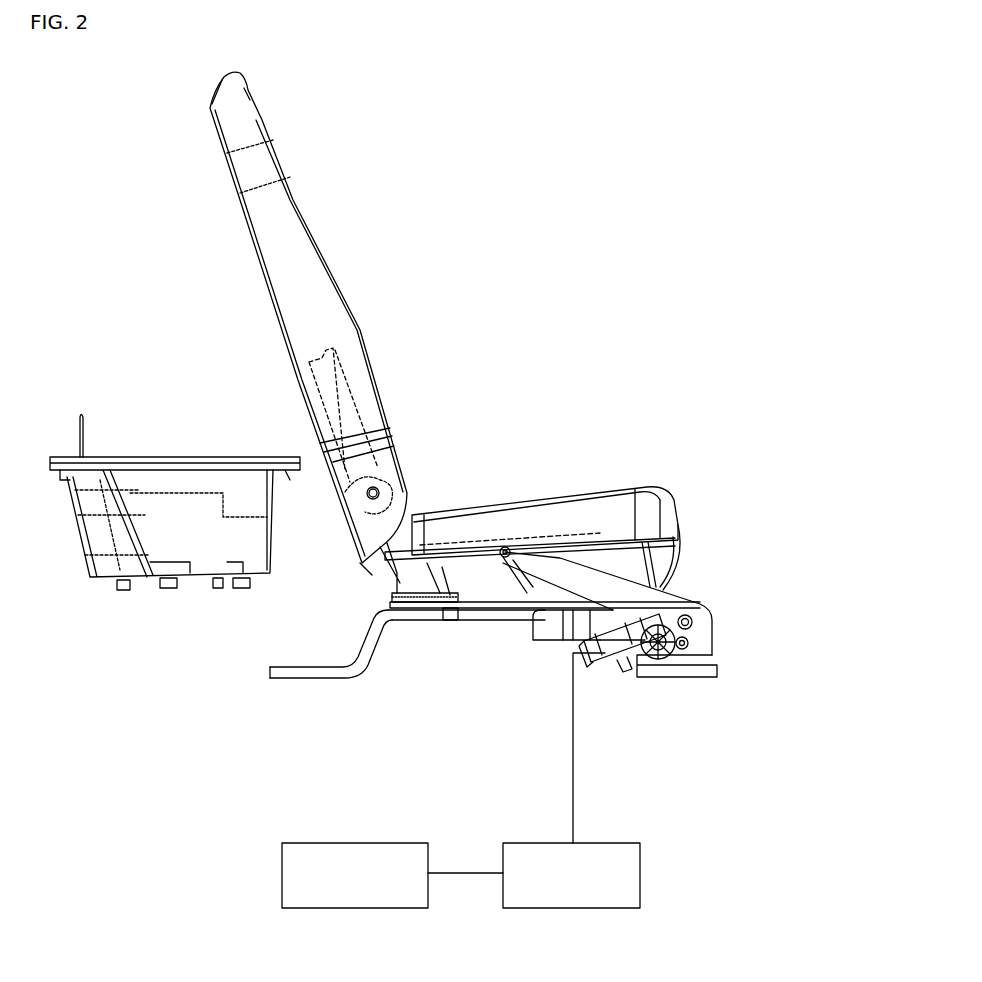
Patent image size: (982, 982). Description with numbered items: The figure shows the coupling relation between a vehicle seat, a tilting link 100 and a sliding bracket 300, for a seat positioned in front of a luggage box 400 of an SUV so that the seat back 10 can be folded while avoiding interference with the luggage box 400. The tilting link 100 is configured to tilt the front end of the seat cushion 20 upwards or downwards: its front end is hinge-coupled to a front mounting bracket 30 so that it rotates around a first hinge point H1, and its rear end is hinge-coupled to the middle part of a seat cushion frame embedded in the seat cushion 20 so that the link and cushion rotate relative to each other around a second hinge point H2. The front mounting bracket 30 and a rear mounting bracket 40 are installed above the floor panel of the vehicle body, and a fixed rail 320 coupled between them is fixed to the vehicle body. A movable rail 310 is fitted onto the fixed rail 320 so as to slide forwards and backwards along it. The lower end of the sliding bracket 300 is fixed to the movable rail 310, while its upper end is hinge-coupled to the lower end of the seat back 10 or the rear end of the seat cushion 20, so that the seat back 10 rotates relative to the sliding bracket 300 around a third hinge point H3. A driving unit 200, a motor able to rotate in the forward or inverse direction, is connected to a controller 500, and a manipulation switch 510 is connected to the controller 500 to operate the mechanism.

The seat back 10 is at (322, 207).
The seat cushion 20 is at (625, 477).
The front mounting bracket 30 is at (704, 647).
The rear mounting bracket 40 is at (303, 680).
The tilting link 100 is at (622, 598).
The driving unit 200 is at (638, 678).
The sliding bracket 300 is at (400, 592).
The movable rail 310 is at (453, 621).
The fixed rail 320 is at (513, 611).
The luggage box 400 is at (122, 449).
The controller 500 is at (573, 909).
The manipulation switch 510 is at (355, 909).
The first hinge point H1 is at (698, 620).
The second hinge point H2 is at (507, 546).
The third hinge point H3 is at (380, 486).